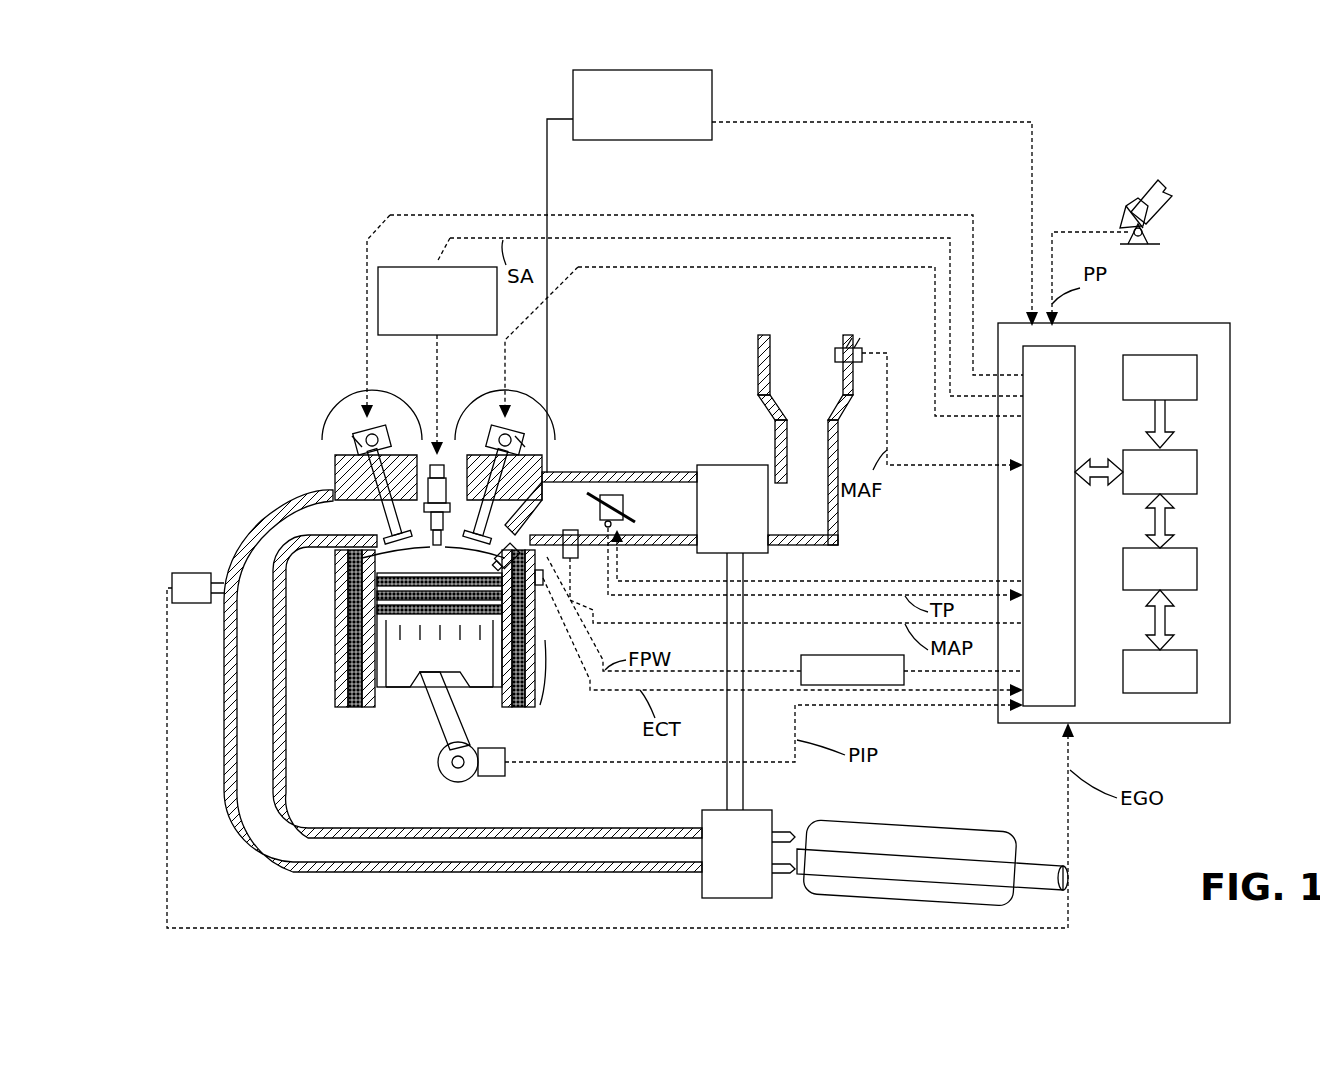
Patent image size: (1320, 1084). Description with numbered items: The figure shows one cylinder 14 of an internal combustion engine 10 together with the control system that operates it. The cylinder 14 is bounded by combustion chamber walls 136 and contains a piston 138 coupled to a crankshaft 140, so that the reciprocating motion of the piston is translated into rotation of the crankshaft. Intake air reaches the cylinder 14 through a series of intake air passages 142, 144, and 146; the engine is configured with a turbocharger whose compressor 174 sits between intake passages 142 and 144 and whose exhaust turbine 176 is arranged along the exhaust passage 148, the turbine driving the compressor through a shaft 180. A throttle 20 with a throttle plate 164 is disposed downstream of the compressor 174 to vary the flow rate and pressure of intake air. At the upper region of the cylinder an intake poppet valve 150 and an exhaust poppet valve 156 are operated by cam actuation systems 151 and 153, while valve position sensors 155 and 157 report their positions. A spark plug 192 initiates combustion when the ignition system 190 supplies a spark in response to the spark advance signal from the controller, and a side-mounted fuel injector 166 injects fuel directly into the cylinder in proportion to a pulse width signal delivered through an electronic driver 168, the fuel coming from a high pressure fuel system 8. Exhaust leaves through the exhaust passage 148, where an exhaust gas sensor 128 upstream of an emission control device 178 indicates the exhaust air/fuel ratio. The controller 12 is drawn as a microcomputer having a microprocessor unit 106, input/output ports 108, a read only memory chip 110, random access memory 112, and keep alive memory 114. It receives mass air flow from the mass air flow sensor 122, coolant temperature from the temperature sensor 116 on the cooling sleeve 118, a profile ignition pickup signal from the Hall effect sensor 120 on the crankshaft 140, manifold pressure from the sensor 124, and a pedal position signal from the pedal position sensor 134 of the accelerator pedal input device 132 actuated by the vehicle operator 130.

The internal combustion engine 10 is at (152, 145).
The high pressure fuel system 8 is at (712, 76).
The controller 12 is at (1230, 323).
The cylinder 14 is at (340, 582).
The throttle 20 is at (612, 495).
The microprocessor unit 106 is at (1197, 472).
The input/output ports 108 is at (1075, 355).
The read only memory chip 110 is at (1197, 377).
The random access memory 112 is at (1197, 572).
The keep alive memory 114 is at (1197, 675).
The temperature sensor 116 is at (540, 585).
The cooling sleeve 118 is at (540, 705).
The Hall effect sensor 120 is at (495, 778).
The mass air flow sensor 122 is at (855, 340).
The manifold pressure sensor 124 is at (578, 560).
The exhaust gas sensor 128 is at (172, 585).
The vehicle operator 130 is at (1178, 192).
The input device 132 is at (1118, 205).
The pedal position sensor 134 is at (1150, 232).
The combustion chamber walls 136 is at (373, 707).
The piston 138 is at (430, 690).
The crankshaft 140 is at (450, 778).
The intake air passage 142 is at (805, 440).
The intake air passage 144 is at (684, 508).
The intake air passage 146 is at (572, 509).
The exhaust passage 148 is at (463, 681).
The intake poppet valve 150 is at (478, 495).
The cam actuation system 151 is at (495, 428).
The cam actuation system 153 is at (385, 428).
The valve position sensor 155 is at (517, 445).
The exhaust poppet valve 156 is at (393, 530).
The valve position sensor 157 is at (353, 445).
The throttle plate 164 is at (590, 492).
The fuel injector 166 is at (522, 545).
The electronic driver 168 is at (805, 656).
The compressor 174 is at (720, 465).
The exhaust turbine 176 is at (702, 885).
The emission control device 178 is at (975, 826).
The shaft 180 is at (743, 778).
The ignition system 190 is at (392, 267).
The spark plug 192 is at (432, 475).